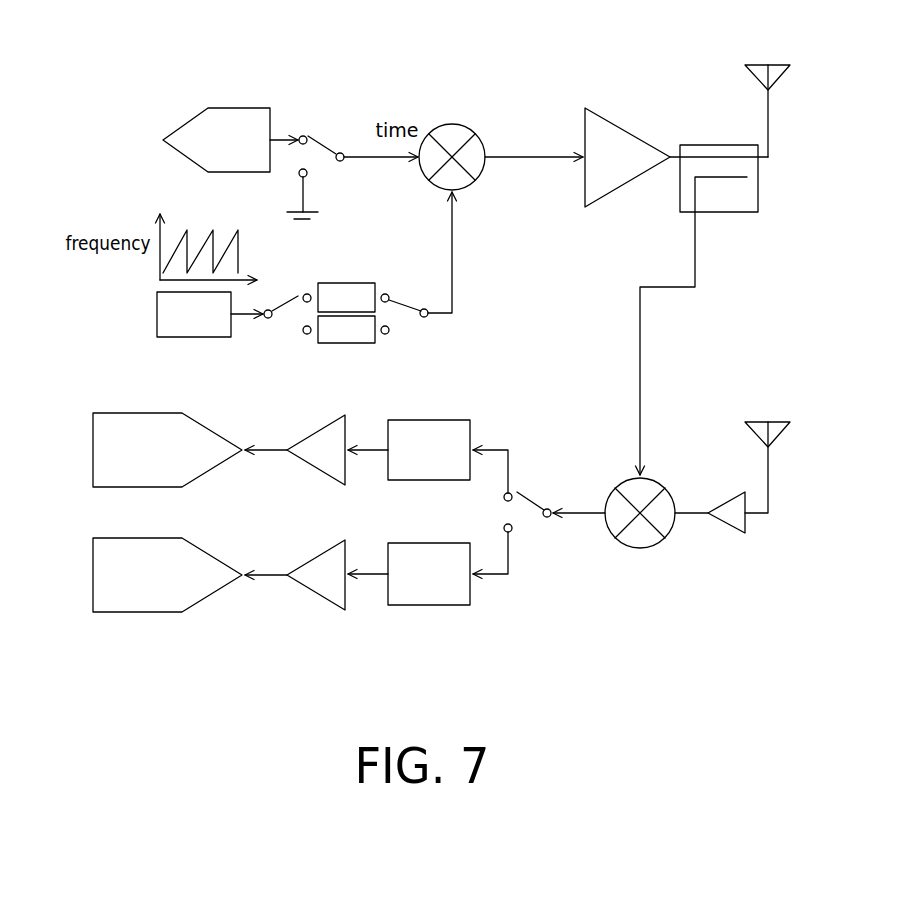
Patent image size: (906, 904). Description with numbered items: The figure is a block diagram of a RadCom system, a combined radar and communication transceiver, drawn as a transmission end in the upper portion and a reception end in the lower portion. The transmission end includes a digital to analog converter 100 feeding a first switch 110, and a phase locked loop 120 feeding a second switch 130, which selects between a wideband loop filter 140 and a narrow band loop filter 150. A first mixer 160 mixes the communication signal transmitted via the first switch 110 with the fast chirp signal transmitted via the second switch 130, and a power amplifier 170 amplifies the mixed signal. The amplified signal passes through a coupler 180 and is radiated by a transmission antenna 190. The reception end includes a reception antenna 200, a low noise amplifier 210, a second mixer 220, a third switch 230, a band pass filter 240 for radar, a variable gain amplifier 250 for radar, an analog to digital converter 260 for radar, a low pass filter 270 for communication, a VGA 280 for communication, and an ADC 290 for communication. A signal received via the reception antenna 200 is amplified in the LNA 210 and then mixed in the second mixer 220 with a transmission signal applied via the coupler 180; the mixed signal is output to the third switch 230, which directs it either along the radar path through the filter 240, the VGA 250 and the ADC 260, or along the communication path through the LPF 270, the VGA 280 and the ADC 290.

The digital to analog converter 100 is at (190, 121).
The switch-1 110 is at (322, 142).
The phase locked loop 120 is at (157, 312).
The switch-2 130 is at (280, 300).
The wideband loop filter 140 is at (343, 283).
The narrow band loop filter 150 is at (362, 343).
The mixer-1 160 is at (450, 124).
The power amplifier 170 is at (585, 125).
The coupler 180 is at (702, 145).
The transmission antenna 190 is at (772, 65).
The reception antenna 200 is at (772, 420).
The low noise amplifier 210 is at (722, 503).
The mixer-2 220 is at (630, 480).
The switch-3 230 is at (528, 500).
The band pass filter for radar 240 is at (453, 420).
The variable gain amplifier for radar 250 is at (303, 460).
The analog to digital converter for radar 260 is at (93, 450).
The low pass filter for communication 270 is at (453, 543).
The VGA for communication 280 is at (297, 582).
The ADC for communication 290 is at (93, 574).